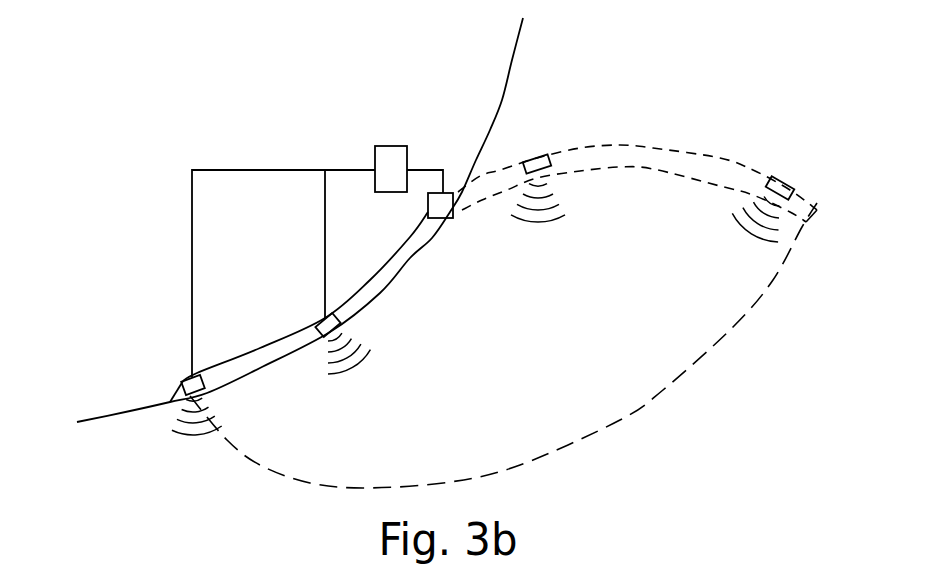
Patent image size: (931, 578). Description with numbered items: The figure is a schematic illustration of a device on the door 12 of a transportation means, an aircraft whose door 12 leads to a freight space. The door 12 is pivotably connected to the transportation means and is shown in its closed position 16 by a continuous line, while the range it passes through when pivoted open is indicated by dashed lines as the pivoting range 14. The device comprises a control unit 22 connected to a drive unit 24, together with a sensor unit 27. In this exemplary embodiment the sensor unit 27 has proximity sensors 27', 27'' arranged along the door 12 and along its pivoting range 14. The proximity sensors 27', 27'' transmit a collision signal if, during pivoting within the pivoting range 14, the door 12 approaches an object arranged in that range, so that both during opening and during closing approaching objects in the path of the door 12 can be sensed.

The door 12 is at (651, 148).
The pivoting range 14 is at (740, 325).
The closed position 16 is at (380, 295).
The control unit 22 is at (391, 157).
The drive unit 24 is at (450, 212).
The sensor unit 27 is at (158, 457).
The proximity sensor 27' is at (481, 241).
The proximity sensor 27'' is at (428, 219).